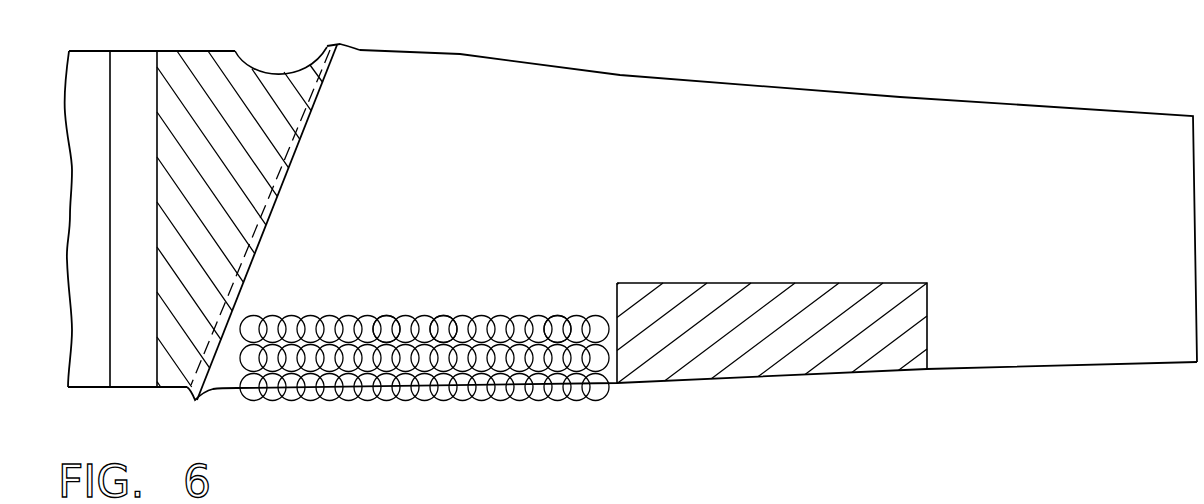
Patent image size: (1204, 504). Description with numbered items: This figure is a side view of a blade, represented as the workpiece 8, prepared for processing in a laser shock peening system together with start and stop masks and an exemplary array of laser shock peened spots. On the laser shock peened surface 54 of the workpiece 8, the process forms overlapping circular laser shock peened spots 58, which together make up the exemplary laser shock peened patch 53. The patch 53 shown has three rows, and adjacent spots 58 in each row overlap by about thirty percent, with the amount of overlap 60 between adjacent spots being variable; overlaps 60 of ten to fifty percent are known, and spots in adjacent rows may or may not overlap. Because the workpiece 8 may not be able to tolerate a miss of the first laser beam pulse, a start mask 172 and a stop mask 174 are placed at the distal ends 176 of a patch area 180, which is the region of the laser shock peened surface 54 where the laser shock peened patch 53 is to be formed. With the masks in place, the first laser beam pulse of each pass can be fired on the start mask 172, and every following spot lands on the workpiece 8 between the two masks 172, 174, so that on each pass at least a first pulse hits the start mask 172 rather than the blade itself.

The workpiece 8 is at (1015, 102).
The laser shock peened patch 53 is at (508, 292).
The laser shock peened surface 54 is at (385, 310).
The laser shock peened spots 58 is at (556, 322).
The overlap 60 is at (445, 330).
The start mask 172 is at (245, 168).
The stop mask 174 is at (725, 292).
The distal ends 176 is at (235, 365).
The patch area 180 is at (232, 316).